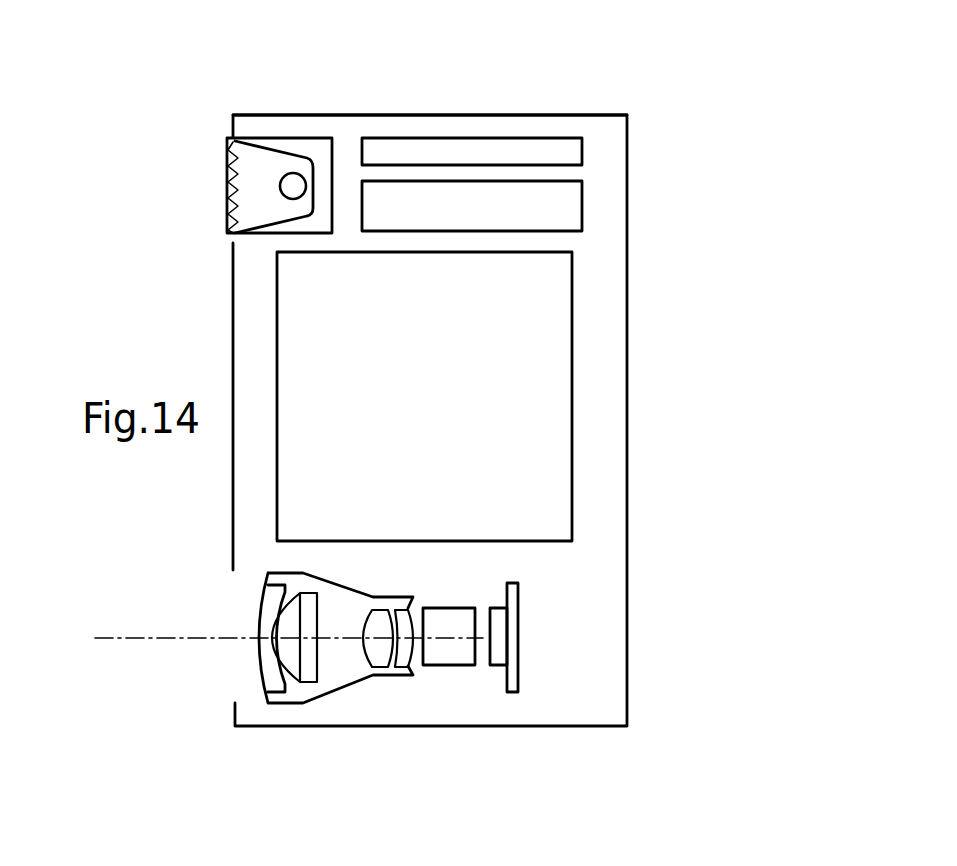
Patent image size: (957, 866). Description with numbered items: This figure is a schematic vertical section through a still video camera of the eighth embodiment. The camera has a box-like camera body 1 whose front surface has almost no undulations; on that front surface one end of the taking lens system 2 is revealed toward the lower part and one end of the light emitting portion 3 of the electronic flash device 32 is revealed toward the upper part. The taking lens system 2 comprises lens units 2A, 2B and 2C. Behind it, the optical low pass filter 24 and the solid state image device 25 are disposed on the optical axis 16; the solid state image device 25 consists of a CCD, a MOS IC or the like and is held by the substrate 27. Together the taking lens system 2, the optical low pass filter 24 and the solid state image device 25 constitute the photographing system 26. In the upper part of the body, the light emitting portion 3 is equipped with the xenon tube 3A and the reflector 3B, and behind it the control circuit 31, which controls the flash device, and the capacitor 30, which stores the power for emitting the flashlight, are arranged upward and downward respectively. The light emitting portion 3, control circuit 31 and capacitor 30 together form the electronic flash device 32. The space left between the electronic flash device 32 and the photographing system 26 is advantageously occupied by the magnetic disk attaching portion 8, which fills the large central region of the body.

The camera body 1 is at (627, 517).
The taking lens system 2 is at (233, 624).
The lens unit 2A is at (258, 612).
The lens unit 2B is at (308, 580).
The lens unit 2C is at (390, 605).
The light emitting portion 3 is at (180, 154).
The xenon tube 3A is at (293, 175).
The reflector 3B is at (314, 205).
The magnetic disk attaching portion 8 is at (558, 429).
The optical axis 16 is at (127, 637).
The optical low pass filter 24 is at (441, 653).
The solid state image device 25 is at (497, 653).
The photographing system 26 is at (321, 712).
The substrate 27 is at (515, 647).
The capacitor 30 is at (577, 206).
The control circuit 31 is at (572, 148).
The electronic flash device 32 is at (465, 120).